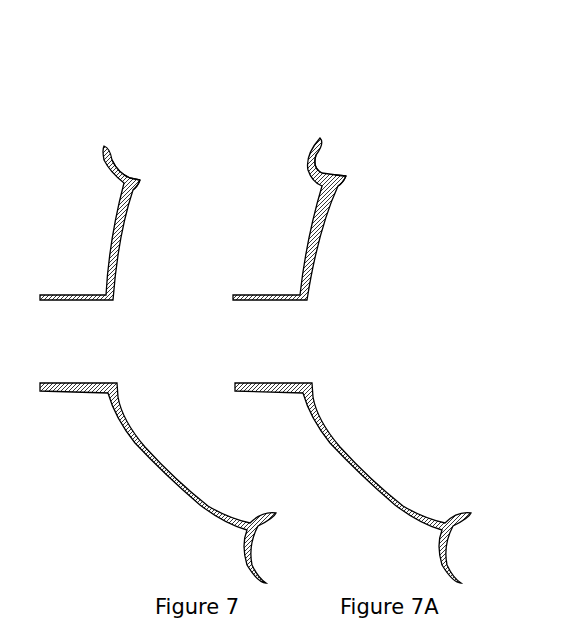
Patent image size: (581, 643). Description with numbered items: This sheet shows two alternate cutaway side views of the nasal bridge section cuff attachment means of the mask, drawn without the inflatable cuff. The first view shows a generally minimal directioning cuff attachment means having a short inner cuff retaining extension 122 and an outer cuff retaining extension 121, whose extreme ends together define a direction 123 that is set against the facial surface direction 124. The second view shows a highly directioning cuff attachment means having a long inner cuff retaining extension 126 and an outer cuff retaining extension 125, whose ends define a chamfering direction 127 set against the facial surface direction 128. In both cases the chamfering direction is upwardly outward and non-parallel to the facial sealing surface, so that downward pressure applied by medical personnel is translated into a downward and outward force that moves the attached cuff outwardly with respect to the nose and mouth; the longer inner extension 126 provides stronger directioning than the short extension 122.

In FIG. 7, the outer cuff retaining extension 121 is at (110, 172).
In FIG. 7, the short inner cuff retaining extension 122 is at (135, 185).
In FIG. 7, the direction 123 is at (135, 176).
In FIG. 7, the facial surface direction 124 is at (138, 177).
In FIG. 7A, the outer cuff retaining extension 125 is at (308, 170).
In FIG. 7A, the long inner cuff retaining extension 126 is at (335, 186).
In FIG. 7A, the chamfering direction 127 is at (344, 174).
In FIG. 7A, the facial surface direction 128 is at (346, 174).